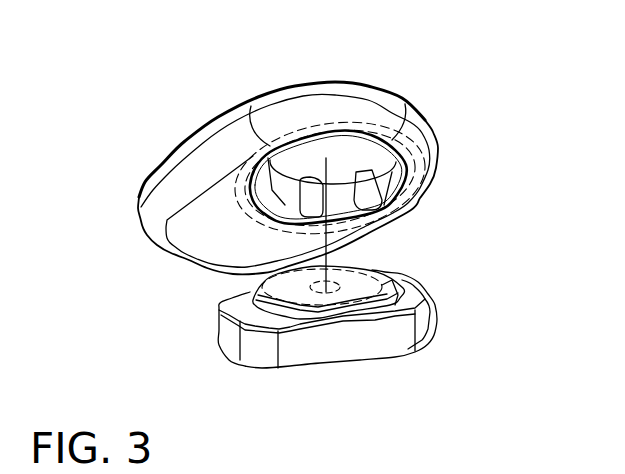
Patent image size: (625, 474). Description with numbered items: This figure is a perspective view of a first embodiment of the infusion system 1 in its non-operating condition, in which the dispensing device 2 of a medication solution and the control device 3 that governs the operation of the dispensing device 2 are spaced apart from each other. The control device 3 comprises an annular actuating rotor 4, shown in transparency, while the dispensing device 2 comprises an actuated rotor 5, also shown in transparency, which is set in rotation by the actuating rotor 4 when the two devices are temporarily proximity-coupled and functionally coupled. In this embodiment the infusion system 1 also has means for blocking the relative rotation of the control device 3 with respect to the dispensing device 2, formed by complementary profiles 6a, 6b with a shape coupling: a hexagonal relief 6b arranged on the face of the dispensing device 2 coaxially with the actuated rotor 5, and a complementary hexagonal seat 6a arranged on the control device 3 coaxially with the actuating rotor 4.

The infusion system 1 is at (370, 223).
The dispensing device 2 is at (375, 331).
The control device 3 is at (325, 154).
The actuating rotor 4 is at (412, 190).
The actuated rotor 5 is at (365, 280).
The non-circular seat 6a is at (352, 189).
The relief 6b is at (341, 310).